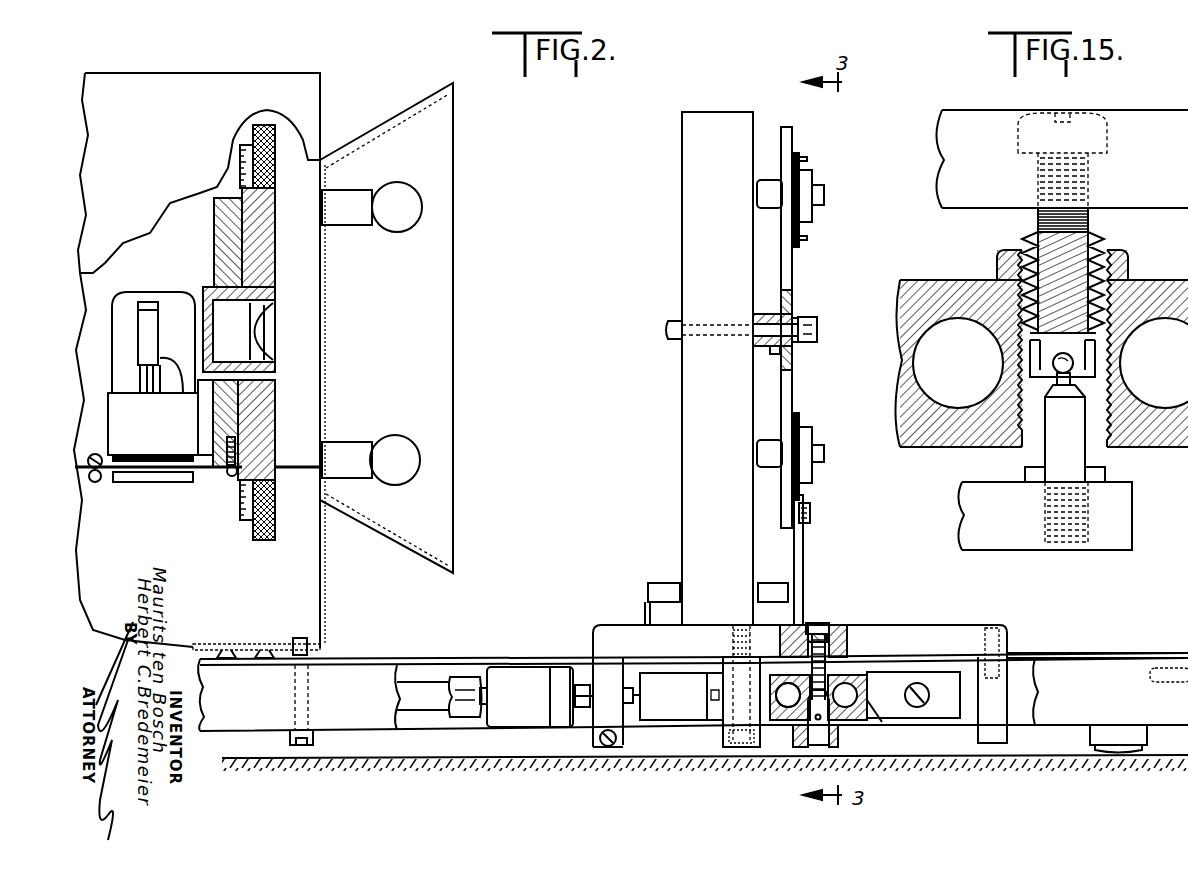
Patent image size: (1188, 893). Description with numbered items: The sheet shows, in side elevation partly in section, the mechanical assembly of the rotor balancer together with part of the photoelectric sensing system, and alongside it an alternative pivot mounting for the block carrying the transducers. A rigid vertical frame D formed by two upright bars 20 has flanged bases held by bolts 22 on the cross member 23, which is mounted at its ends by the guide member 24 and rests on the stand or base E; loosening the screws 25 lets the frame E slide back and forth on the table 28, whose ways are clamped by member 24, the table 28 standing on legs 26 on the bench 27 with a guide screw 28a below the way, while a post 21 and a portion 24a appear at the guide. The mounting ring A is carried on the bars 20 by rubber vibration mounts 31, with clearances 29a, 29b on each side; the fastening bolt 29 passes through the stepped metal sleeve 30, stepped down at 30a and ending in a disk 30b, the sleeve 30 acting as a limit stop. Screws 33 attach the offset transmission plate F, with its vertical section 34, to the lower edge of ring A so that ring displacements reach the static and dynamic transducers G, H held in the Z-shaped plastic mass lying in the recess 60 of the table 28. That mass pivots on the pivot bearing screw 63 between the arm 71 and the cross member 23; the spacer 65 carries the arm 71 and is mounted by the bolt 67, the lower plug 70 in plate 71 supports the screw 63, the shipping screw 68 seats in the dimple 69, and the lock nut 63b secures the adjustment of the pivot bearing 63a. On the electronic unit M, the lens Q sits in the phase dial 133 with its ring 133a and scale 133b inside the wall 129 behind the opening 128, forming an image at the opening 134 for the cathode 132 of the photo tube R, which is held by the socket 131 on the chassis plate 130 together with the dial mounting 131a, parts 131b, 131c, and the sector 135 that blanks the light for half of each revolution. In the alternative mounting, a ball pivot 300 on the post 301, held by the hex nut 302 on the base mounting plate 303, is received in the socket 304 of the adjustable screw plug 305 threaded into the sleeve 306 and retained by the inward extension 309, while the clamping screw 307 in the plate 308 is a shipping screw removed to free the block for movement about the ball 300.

In FIG. 2, the electronic unit M is at (322, 88).
In FIG. 2, the opening 128 is at (327, 357).
In FIG. 2, the wall 129 is at (327, 172).
In FIG. 2, the outer lens barrel ring 133a is at (265, 125).
In FIG. 2, the graduated scale strip 133b is at (246, 142).
In FIG. 2, the phase dial 133 is at (262, 250).
In FIG. 2, the opening 134 is at (222, 292).
In FIG. 2, the lens Q is at (272, 338).
In FIG. 2, the cathode 132 is at (142, 328).
In FIG. 2, the photo electric tube R is at (168, 300).
In FIG. 2, the sector 135 is at (205, 356).
In FIG. 2, the shutter box 131c is at (222, 420).
In FIG. 2, the mounting for the phase dial 131a is at (228, 441).
In FIG. 2, the chassis plate 130 is at (161, 483).
In FIG. 2, the photo tube socket 131 is at (118, 483).
In FIG. 2, the adjusting screw 131b is at (232, 478).
In FIG. 2, the upright bars 20 is at (682, 152).
In FIG. 2, the rigid vertical frame D is at (697, 428).
In FIG. 2, the mounting ring A is at (789, 264).
In FIG. 2, the transmission plate F is at (805, 570).
In FIG. 2, the vertical section 34 is at (805, 539).
In FIG. 2, the rubber vibration mounts 31 is at (805, 173).
In FIG. 2, the screws 33 is at (811, 511).
In FIG. 2, the fastening bolt 29 is at (720, 338).
In FIG. 2, the stepped metal sleeve 30 is at (762, 314).
In FIG. 2, the stepped-down portion 30a is at (796, 313).
In FIG. 2, the disk 30b is at (818, 323).
In FIG. 2, the clearance 29b is at (799, 350).
In FIG. 2, the clearance 29a is at (777, 355).
In FIG. 2, the bolts 22 is at (657, 583).
In FIG. 2, the post 21 is at (645, 605).
In FIG. 2, the cross member 23 is at (596, 633).
In FIG. 2, the screws 25 is at (988, 625).
In FIG. 2, the stand or base E is at (958, 622).
In FIG. 2, the guide member 24 is at (997, 703).
In FIG. 2, the rail portion 24a is at (605, 708).
In FIG. 2, the guide screw 28a is at (609, 746).
In FIG. 2, the spacer 65 is at (712, 704).
In FIG. 2, the bolt 67 is at (735, 748).
In FIG. 2, the arm 71 is at (765, 746).
In FIG. 2, the pivot bearing screw 63 is at (828, 677).
In FIG. 2, the lock nut 63b is at (786, 630).
In FIG. 2, the screw 68 is at (830, 630).
In FIG. 2, the dimple 69 is at (828, 660).
In FIG. 2, the lower plug 70 is at (840, 741).
In FIG. 2, the pivot bearing 63a is at (868, 708).
In FIG. 2, the static mechano-electronic transducer G is at (784, 690).
In FIG. 15, the static mechano-electronic transducer G is at (935, 422).
In FIG. 2, the dynamic mechano-electronic transducer H is at (867, 693).
In FIG. 2, the recess 60 is at (778, 722).
In FIG. 2, the table 28 is at (1107, 668).
In FIG. 2, the legs 26 is at (1118, 737).
In FIG. 2, the bench 27 is at (1000, 768).
In FIG. 15, the plate or platform 308 is at (1165, 118).
In FIG. 15, the clamping screw 307 is at (1089, 181).
In FIG. 15, the adjustable screw plug 305 is at (1129, 263).
In FIG. 15, the sleeve 306 is at (1000, 327).
In FIG. 15, the ball pivot 300 is at (1027, 371).
In FIG. 15, the socket 304 is at (1096, 349).
In FIG. 15, the inward extension 309 is at (1074, 368).
In FIG. 15, the post 301 is at (1070, 454).
In FIG. 15, the hex nut 302 is at (1033, 469).
In FIG. 15, the base mounting plate 303 is at (1110, 542).